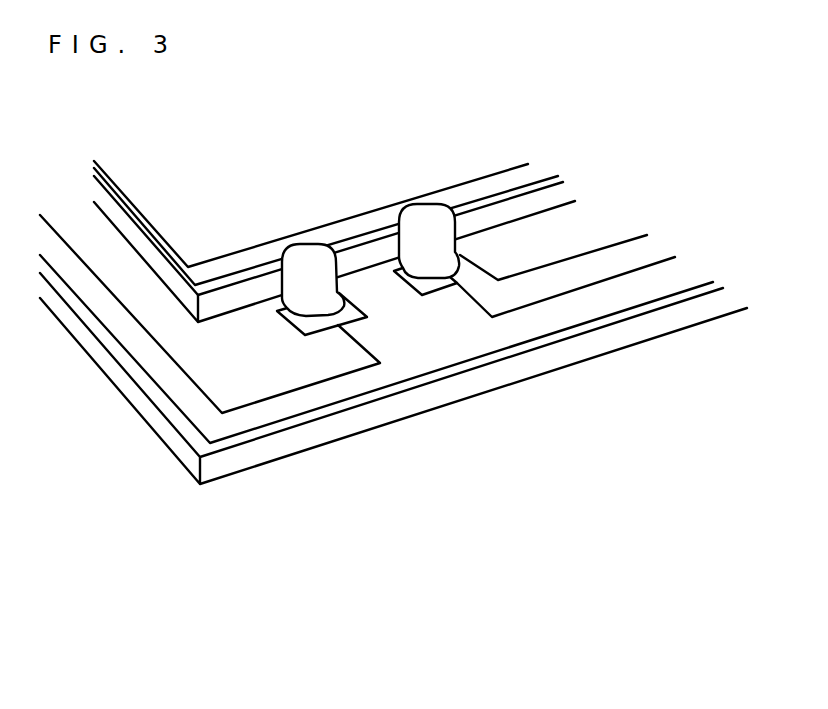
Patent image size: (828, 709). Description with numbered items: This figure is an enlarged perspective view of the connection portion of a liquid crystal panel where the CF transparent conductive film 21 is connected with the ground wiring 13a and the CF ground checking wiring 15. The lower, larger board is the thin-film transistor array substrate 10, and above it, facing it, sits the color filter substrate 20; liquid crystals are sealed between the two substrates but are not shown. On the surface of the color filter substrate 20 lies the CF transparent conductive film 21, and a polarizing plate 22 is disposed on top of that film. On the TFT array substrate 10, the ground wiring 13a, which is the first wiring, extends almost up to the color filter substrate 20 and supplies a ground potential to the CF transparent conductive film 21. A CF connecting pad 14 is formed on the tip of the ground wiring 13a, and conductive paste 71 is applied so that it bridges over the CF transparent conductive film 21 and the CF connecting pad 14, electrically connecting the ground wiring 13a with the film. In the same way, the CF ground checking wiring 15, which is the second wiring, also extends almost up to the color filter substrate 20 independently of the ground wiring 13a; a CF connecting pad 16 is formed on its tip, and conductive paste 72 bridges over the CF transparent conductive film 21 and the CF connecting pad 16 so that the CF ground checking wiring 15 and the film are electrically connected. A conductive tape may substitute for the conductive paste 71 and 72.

The thin-film transistor array substrate 10 is at (170, 437).
The ground wiring 13a is at (637, 258).
The CF connecting pad 14 is at (478, 253).
The CF ground checking wiring 15 is at (413, 373).
The CF connecting pad 16 is at (290, 323).
The color filter substrate 20 is at (307, 236).
The CF transparent conductive film 21 is at (492, 187).
The polarizing plate 22 is at (212, 178).
The conductive paste 71 is at (418, 215).
The conductive paste 72 is at (313, 293).